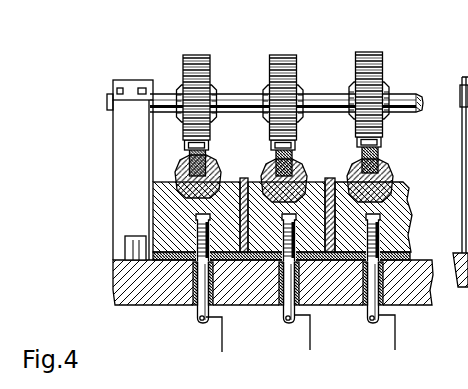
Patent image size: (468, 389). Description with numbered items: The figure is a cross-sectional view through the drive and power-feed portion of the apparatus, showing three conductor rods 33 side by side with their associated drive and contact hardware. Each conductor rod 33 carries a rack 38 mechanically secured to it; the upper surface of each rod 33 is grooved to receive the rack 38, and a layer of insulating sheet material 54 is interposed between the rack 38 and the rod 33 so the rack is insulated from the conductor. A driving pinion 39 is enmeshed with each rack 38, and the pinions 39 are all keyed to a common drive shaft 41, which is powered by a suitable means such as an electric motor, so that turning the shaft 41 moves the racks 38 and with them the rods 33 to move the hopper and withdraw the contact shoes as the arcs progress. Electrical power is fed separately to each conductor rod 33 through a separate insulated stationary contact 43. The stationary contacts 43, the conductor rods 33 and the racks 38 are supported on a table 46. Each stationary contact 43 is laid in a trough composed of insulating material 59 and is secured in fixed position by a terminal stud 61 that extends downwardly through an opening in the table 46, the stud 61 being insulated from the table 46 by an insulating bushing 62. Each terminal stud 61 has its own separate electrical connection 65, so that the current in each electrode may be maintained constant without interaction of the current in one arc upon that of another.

The conductor rod 33 is at (180, 169).
The rack 38 is at (268, 158).
The driving pinion 39 is at (208, 57).
The drive shaft 41 is at (420, 80).
The stationary contact 43 is at (214, 176).
The table 46 is at (428, 259).
The insulating sheet material 54 is at (300, 163).
The insulating material 59 is at (244, 179).
The terminal stud 61 is at (196, 320).
The insulating bushing 62 is at (186, 305).
The electrical connection 65 is at (221, 340).